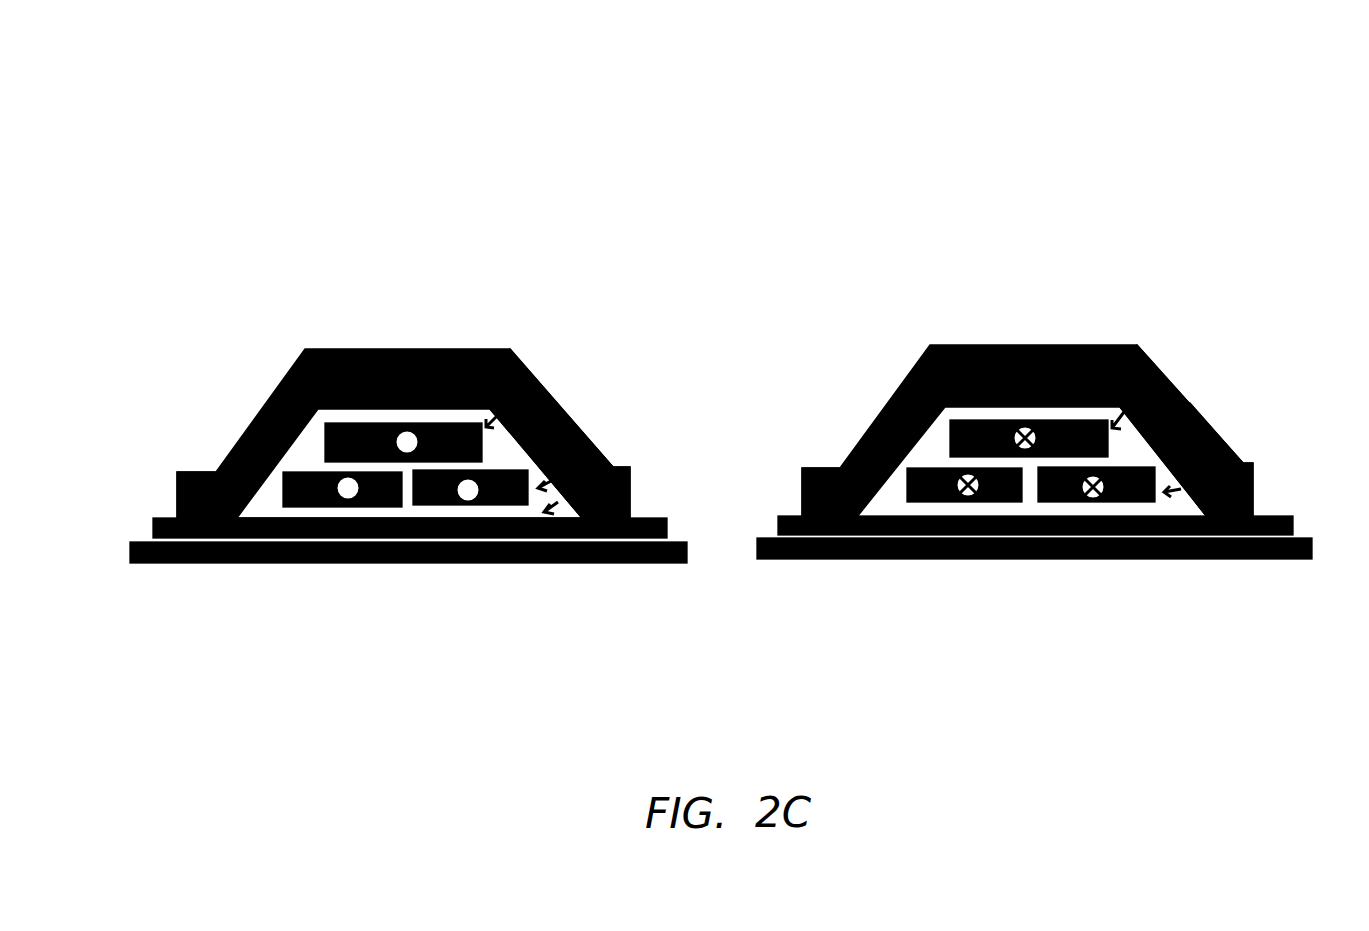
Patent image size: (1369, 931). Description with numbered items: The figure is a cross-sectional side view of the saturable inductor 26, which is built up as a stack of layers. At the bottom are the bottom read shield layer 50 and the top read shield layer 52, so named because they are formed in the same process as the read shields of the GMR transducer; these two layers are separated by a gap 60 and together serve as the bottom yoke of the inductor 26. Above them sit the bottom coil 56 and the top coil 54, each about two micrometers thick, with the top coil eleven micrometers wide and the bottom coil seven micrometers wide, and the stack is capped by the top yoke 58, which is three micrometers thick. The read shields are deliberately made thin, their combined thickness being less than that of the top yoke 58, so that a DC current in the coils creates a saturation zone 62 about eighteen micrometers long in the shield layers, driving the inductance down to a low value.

The saturable inductor 26 is at (738, 187).
The bottom read shield layer 50 is at (128, 556).
The top read shield layer 52 is at (153, 522).
The top coil 54 is at (545, 395).
The bottom coil 56 is at (582, 452).
The top yoke 58 is at (340, 348).
The gap 60 is at (140, 532).
The saturation zone 62 is at (613, 467).